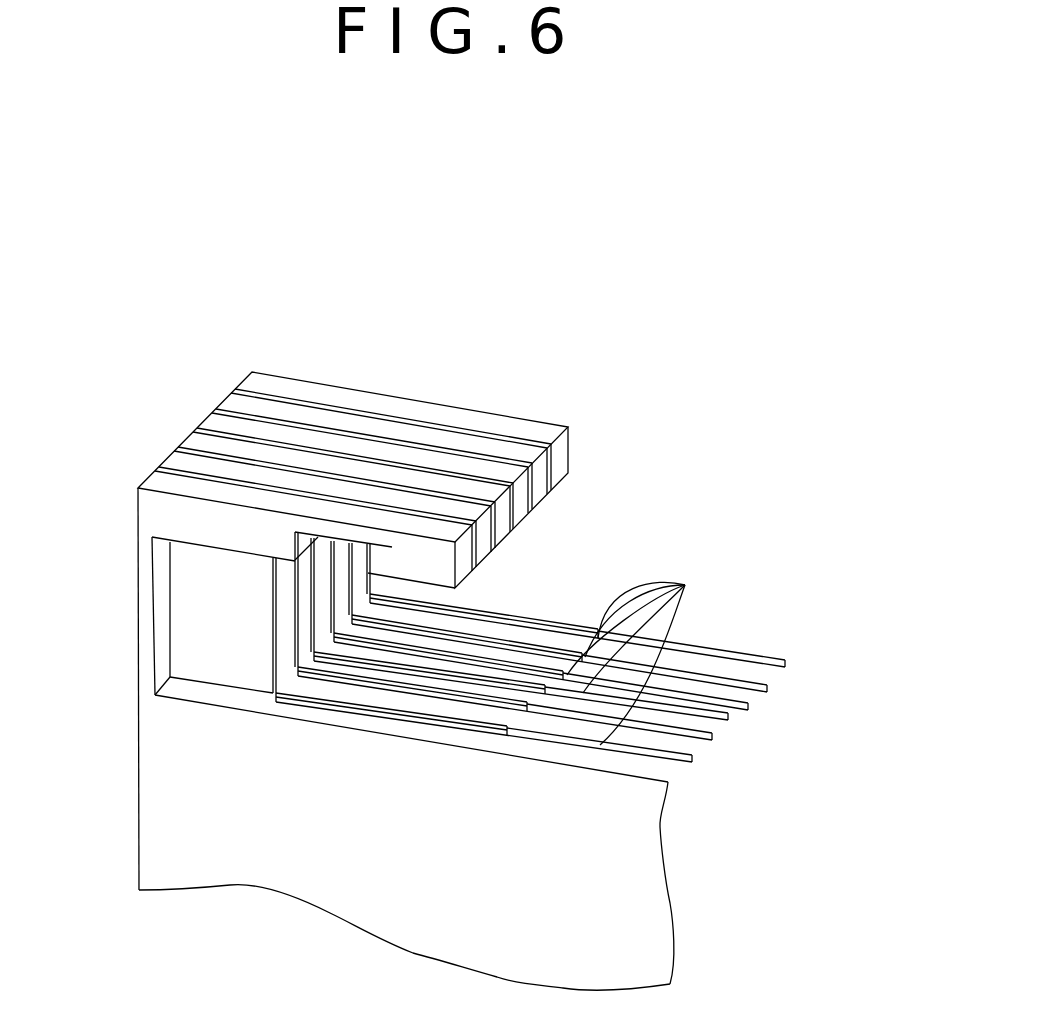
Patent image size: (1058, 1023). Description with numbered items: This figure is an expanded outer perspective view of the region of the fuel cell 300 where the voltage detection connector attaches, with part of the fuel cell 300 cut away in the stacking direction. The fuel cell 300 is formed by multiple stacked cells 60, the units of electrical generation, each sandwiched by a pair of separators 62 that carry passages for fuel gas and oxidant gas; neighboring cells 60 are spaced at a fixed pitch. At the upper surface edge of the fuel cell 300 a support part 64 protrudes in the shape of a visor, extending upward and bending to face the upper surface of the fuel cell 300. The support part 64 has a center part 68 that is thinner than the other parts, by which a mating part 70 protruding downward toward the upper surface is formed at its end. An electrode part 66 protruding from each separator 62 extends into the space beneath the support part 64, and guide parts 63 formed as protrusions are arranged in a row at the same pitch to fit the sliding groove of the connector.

The cell 60 is at (772, 676).
The separator 62 is at (787, 661).
The guide part 63 is at (688, 585).
The support part 64 is at (520, 502).
The electrode part 66 is at (187, 595).
The center part 68 is at (337, 530).
The mating part 70 is at (433, 559).
The fuel cell 300 is at (436, 882).